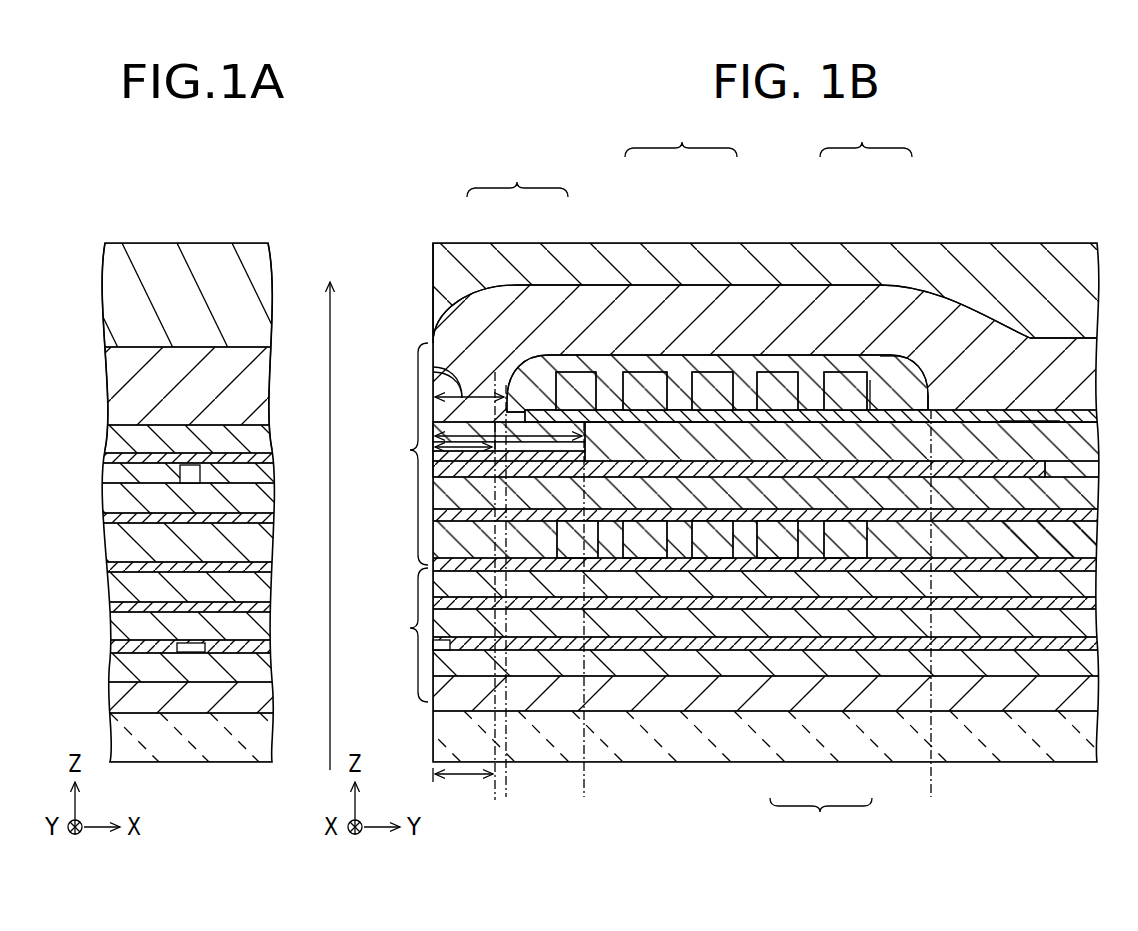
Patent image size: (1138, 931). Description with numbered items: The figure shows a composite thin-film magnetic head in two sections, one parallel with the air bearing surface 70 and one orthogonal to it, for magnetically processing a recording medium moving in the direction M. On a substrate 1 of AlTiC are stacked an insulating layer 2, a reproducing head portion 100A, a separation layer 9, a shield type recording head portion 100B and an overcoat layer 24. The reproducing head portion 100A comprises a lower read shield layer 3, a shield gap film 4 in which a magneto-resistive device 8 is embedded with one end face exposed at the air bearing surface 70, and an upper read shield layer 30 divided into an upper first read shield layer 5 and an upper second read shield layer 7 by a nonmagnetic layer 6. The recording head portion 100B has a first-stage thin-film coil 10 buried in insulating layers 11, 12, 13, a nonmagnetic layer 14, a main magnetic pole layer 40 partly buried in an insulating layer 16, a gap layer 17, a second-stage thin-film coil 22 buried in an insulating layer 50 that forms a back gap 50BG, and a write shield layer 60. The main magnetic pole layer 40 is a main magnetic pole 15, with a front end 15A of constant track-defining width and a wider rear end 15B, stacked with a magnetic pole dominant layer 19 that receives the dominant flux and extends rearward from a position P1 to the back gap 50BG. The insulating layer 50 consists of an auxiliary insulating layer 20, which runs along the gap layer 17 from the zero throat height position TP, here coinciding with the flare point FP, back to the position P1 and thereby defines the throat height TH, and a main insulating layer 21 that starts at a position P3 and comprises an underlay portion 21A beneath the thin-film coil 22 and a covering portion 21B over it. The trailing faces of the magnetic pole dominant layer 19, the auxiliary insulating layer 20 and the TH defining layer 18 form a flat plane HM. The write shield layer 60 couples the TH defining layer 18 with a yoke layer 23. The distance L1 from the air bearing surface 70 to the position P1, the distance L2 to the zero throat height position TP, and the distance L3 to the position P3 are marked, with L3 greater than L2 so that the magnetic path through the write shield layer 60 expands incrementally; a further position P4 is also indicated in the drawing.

In FIG. 1A, the substrate 1 is at (267, 747).
In FIG. 1B, the substrate 1 is at (1015, 742).
In FIG. 1A, the insulating layer 2 is at (245, 703).
In FIG. 1B, the insulating layer 2 is at (990, 700).
In FIG. 1A, the lower read shield layer 3 is at (225, 668).
In FIG. 1B, the lower read shield layer 3 is at (936, 662).
In FIG. 1A, the shield gap film 4 is at (170, 652).
In FIG. 1B, the shield gap film 4 is at (897, 652).
In FIG. 1A, the upper first read shield layer 5 is at (158, 632).
In FIG. 1B, the upper first read shield layer 5 is at (857, 630).
In FIG. 1A, the nonmagnetic layer 6 is at (143, 610).
In FIG. 1B, the nonmagnetic layer 6 is at (822, 600).
In FIG. 1A, the upper second read shield layer 7 is at (122, 592).
In FIG. 1B, the upper second read shield layer 7 is at (790, 585).
In FIG. 1A, the magneto-resistive effect device 8 is at (190, 653).
In FIG. 1B, the magneto-resistive effect device 8 is at (438, 650).
In FIG. 1A, the separation layer 9 is at (110, 571).
In FIG. 1B, the separation layer 9 is at (750, 563).
In FIG. 1B, the first-stage thin-film coil 10 is at (712, 552).
In FIG. 1B, the insulating layer 11 is at (682, 548).
In FIG. 1A, the insulating layer 12 is at (110, 545).
In FIG. 1B, the insulating layer 12 is at (1040, 540).
In FIG. 1A, the insulating layer 13 is at (110, 519).
In FIG. 1B, the insulating layer 13 is at (643, 513).
In FIG. 1A, the nonmagnetic layer 14 is at (110, 497).
In FIG. 1B, the nonmagnetic layer 14 is at (577, 502).
In FIG. 1A, the main magnetic pole 15 is at (233, 455).
In FIG. 1B, the main magnetic pole 15 is at (592, 197).
In FIG. 1B, the front end 15A is at (560, 447).
In FIG. 1B, the rear end 15B is at (600, 416).
In FIG. 1A, the insulating layer 16 is at (262, 340).
In FIG. 1B, the insulating layer 16 is at (1080, 475).
In FIG. 1A, the gap layer 17 is at (124, 440).
In FIG. 1B, the gap layer 17 is at (520, 483).
In FIG. 1A, the TH defining layer 18 is at (160, 428).
In FIG. 1B, the TH defining layer 18 is at (467, 425).
In FIG. 1B, the magnetic pole dominant layer 19 is at (711, 435).
In FIG. 1B, the auxiliary insulating layer 20 is at (585, 480).
In FIG. 1B, the main insulating layer 21 is at (857, 197).
In FIG. 1B, the main insulating layer portion 21A is at (870, 400).
In FIG. 1B, the main insulating layer portion 21B is at (895, 370).
In FIG. 1B, the second-stage thin-film coil 22 is at (762, 393).
In FIG. 1A, the yoke layer 23 is at (190, 395).
In FIG. 1B, the yoke layer 23 is at (537, 292).
In FIG. 1A, the overcoat layer 24 is at (205, 265).
In FIG. 1B, the overcoat layer 24 is at (1065, 252).
In FIG. 1B, the upper read shield layer 30 is at (821, 821).
In FIG. 1B, the main magnetic pole layer 40 is at (681, 134).
In FIG. 1B, the insulating layer 50 is at (866, 134).
In FIG. 1B, the back gap 50BG is at (931, 412).
In FIG. 1B, the write shield layer 60 is at (517, 174).
In FIG. 1B, the air bearing surface 70 is at (431, 287).
In FIG. 1B, the reproducing head portion 100A is at (389, 635).
In FIG. 1B, the recording head portion 100B is at (389, 454).
In FIG. 1B, the distance L1 is at (440, 404).
In FIG. 1B, the distance L2 is at (440, 474).
In FIG. 1B, the distance L3 is at (440, 368).
In FIG. 1B, the throat height TH is at (463, 786).
In FIG. 1B, the zero throat height position TP is at (495, 803).
In FIG. 1B, the flare point FP is at (472, 839).
In FIG. 1B, the position P1 is at (584, 803).
In FIG. 1B, the position P3 is at (506, 803).
In FIG. 1B, the position P4 is at (931, 803).
In FIG. 1B, the flat plane HM is at (1030, 417).
In FIG. 1B, the direction of travel of the medium M is at (334, 684).